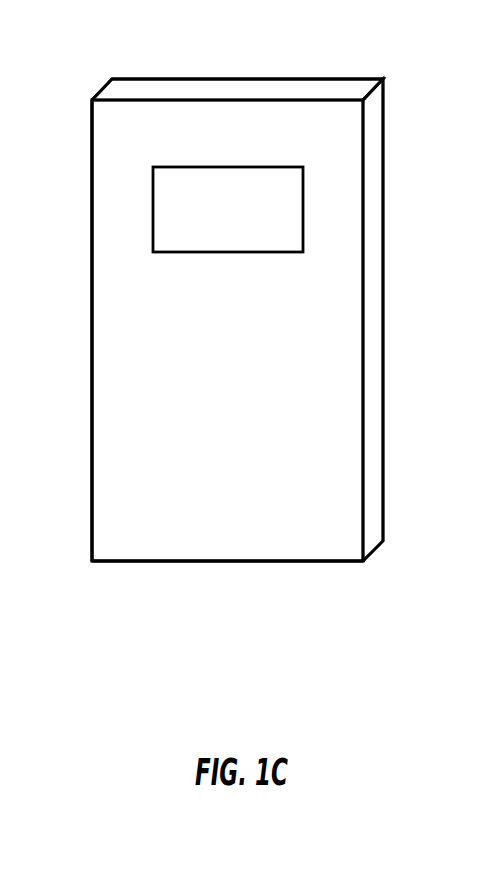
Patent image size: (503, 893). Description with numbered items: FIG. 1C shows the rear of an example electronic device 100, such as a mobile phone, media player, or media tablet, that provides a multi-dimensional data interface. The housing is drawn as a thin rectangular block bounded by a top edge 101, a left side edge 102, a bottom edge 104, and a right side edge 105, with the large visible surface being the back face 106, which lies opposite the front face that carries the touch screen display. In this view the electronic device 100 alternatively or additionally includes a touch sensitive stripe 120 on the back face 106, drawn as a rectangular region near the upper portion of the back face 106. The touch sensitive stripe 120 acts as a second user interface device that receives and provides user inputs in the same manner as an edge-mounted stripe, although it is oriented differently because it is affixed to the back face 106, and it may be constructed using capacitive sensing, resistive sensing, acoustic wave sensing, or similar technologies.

The electronic device 100 is at (361, 78).
The top edge 101 is at (266, 84).
The left side edge 102 is at (378, 520).
The bottom edge 104 is at (130, 570).
The right side edge 105 is at (87, 393).
The back face 106 is at (266, 474).
The touch sensitive stripe 120 is at (320, 203).